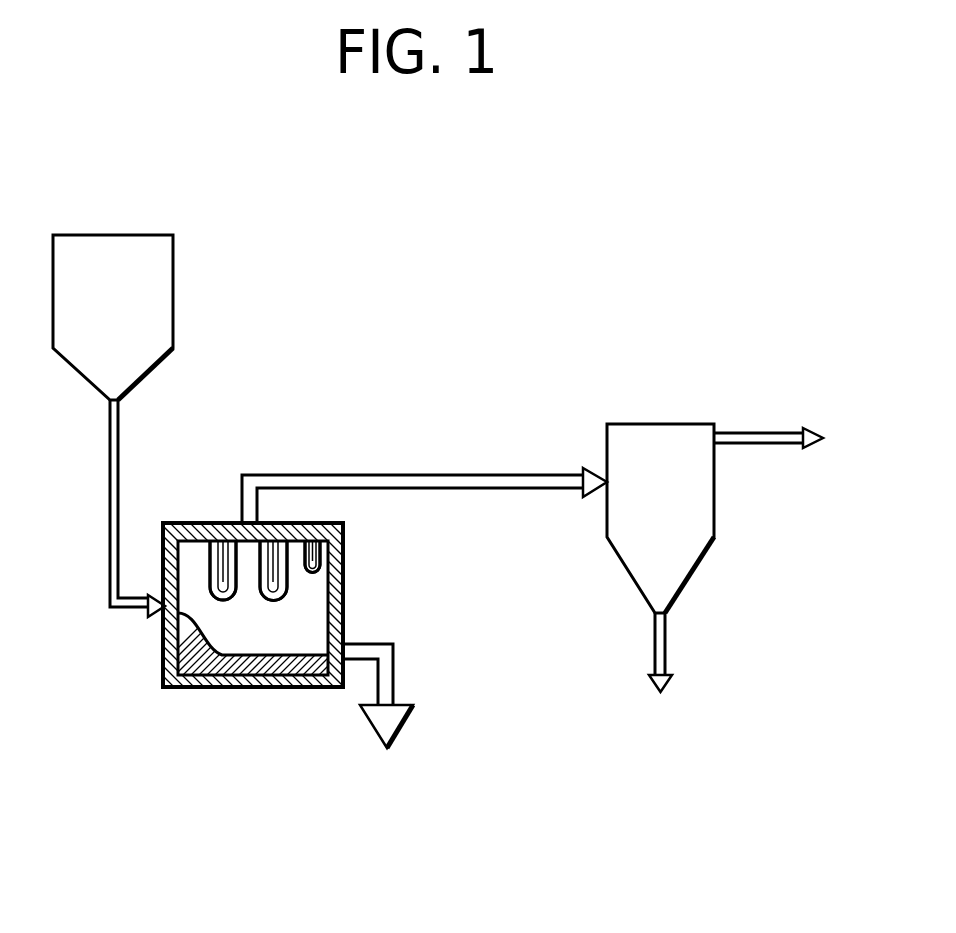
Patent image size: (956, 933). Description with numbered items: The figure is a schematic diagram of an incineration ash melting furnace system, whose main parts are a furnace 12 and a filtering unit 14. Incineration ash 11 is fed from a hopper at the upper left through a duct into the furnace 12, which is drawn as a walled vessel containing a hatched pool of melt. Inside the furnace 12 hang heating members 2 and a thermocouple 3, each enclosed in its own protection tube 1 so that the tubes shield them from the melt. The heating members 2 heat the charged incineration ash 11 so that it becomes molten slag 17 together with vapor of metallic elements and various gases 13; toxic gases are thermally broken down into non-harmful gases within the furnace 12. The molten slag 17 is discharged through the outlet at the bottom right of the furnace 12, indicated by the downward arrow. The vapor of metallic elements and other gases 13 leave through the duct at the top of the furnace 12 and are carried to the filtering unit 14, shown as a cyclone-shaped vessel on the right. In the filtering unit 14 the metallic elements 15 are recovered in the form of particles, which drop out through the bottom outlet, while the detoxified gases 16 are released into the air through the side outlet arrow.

The protection tube 1 is at (234, 597).
The heating member 2 is at (260, 560).
The thermocouple 3 is at (343, 524).
The incineration ash 11 is at (114, 228).
The furnace 12 is at (205, 687).
The vapor of metallic elements and other gases 13 is at (447, 475).
The filtering unit 14 is at (653, 450).
The metallic elements 15 is at (663, 675).
The detoxified gases 16 is at (790, 441).
The molten slag 17 is at (378, 718).